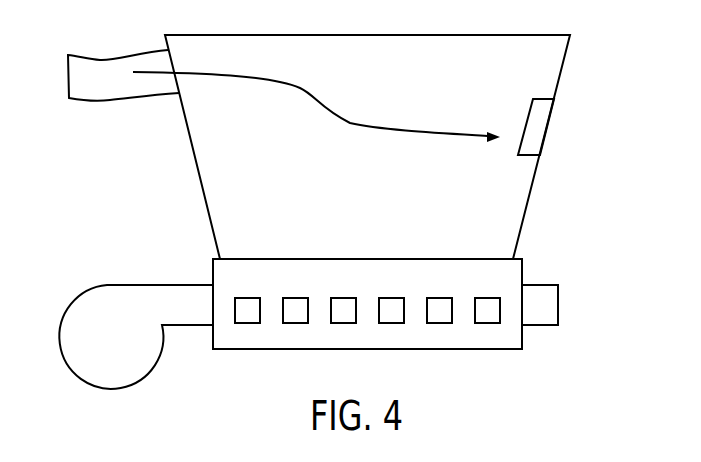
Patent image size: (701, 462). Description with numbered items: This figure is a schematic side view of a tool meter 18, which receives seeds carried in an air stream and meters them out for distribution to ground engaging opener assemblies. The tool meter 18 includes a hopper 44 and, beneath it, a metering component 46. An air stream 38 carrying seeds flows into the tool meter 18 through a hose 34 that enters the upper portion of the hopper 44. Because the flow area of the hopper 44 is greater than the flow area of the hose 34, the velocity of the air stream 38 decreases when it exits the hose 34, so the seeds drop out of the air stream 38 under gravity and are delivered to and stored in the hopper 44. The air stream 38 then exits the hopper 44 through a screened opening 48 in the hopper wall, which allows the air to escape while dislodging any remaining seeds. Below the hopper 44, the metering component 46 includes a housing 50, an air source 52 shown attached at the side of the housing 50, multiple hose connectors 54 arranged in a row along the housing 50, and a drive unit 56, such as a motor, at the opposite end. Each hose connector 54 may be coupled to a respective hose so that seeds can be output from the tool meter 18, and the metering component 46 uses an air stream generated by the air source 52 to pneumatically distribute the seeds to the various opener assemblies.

The tool meter 18 is at (82, 156).
The hose 34 is at (125, 99).
The air stream 38 is at (351, 122).
The hopper 44 is at (563, 67).
The metering component 46 is at (433, 349).
The screened opening 48 is at (531, 157).
The housing 50 is at (503, 349).
The air source 52 is at (138, 380).
The hose connectors 54 is at (345, 298).
The drive unit 56 is at (558, 305).